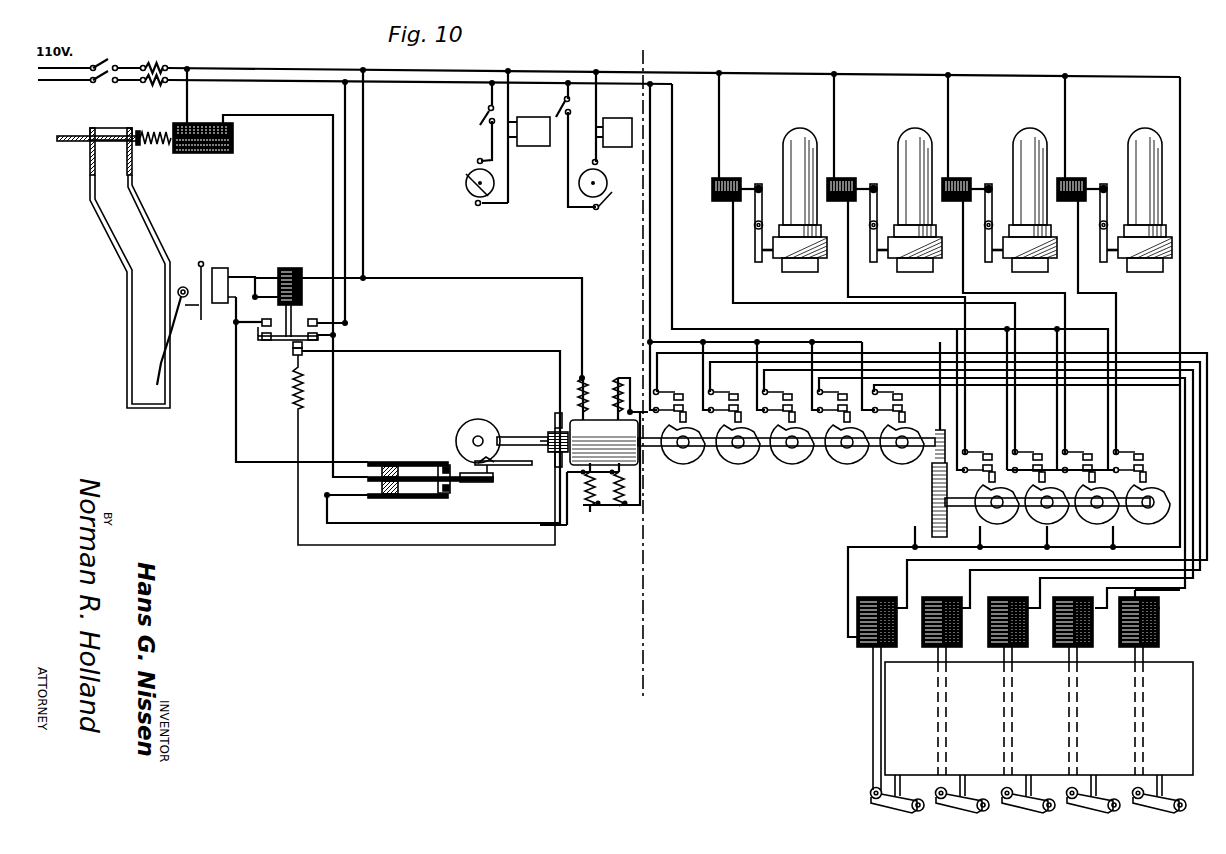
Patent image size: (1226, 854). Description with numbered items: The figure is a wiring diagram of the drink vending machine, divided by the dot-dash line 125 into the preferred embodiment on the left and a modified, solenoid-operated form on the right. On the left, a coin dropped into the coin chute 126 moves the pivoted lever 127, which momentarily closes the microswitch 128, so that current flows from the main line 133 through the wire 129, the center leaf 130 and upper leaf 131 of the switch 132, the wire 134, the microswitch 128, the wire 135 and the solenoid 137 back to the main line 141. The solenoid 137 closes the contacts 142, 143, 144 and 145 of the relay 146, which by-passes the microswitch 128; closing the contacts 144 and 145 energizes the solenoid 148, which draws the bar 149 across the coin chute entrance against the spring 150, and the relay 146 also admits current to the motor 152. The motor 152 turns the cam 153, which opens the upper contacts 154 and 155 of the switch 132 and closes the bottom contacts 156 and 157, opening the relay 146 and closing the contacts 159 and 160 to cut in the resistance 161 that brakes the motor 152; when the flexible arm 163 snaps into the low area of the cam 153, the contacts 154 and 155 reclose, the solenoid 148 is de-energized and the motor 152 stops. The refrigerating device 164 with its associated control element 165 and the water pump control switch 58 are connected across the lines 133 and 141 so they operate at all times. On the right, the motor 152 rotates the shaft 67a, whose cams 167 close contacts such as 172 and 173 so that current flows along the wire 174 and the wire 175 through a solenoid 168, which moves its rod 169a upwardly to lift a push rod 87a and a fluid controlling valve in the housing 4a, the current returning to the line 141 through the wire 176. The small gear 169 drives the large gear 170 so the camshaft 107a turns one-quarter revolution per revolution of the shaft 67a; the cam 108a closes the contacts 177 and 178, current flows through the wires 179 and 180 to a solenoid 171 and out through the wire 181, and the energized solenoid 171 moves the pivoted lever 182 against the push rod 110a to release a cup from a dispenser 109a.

The main line 141 is at (316, 64).
The main line 133 is at (276, 83).
The solenoid 148 is at (207, 154).
The spring 150 is at (156, 148).
The bar 149 is at (72, 128).
The coin chute 126 is at (165, 231).
The pivoted lever 127 is at (180, 334).
The microswitch 128 is at (218, 268).
The wire 135 is at (252, 270).
The solenoid 137 is at (292, 266).
The contact 142 is at (265, 320).
The contact 144 is at (313, 320).
The wire 129 is at (348, 194).
The contact 145 is at (347, 322).
The contact 143 is at (263, 342).
The relay 146 is at (276, 355).
The contact 159 is at (306, 346).
The contact 160 is at (308, 355).
The resistance 161 is at (293, 405).
The wire 134 is at (241, 466).
The upper leaf 131 is at (410, 462).
The contact 155 is at (470, 483).
The switch 132 is at (385, 500).
The contact 156 is at (443, 489).
The contact 157 is at (463, 488).
The contact 154 is at (444, 465).
The center leaf 130 is at (472, 484).
The flexible arm 163 is at (503, 468).
The cam 153 is at (480, 420).
The motor 152 is at (606, 519).
The refrigerating or cooling device 164 is at (472, 194).
The relay 165 is at (533, 131).
The water pump control switch 58 is at (594, 141).
The dot-dash line 125 is at (647, 369).
The wire 174 is at (653, 234).
The wire 179 is at (670, 269).
The wire 180 is at (733, 291).
The wire 181 is at (719, 139).
The solenoid 171 is at (730, 175).
The pivoted lever 182 is at (756, 213).
The push rod 110a is at (762, 264).
The dispenser 109a is at (798, 270).
The wire 176 is at (1178, 320).
The wire 175 is at (919, 356).
The contact 173 is at (675, 392).
The contact 172 is at (684, 408).
The cam 167 is at (690, 464).
The shaft 67a is at (678, 462).
The gear 170 is at (932, 514).
The gear 169 is at (940, 430).
The contact 177 is at (984, 454).
The contact 178 is at (985, 472).
The camshaft 107a is at (959, 514).
The cam 108a is at (1028, 525).
The solenoid 168 is at (855, 617).
The plunger rod 169a is at (872, 744).
The housing 4a is at (895, 694).
The push rod 87a is at (1029, 794).